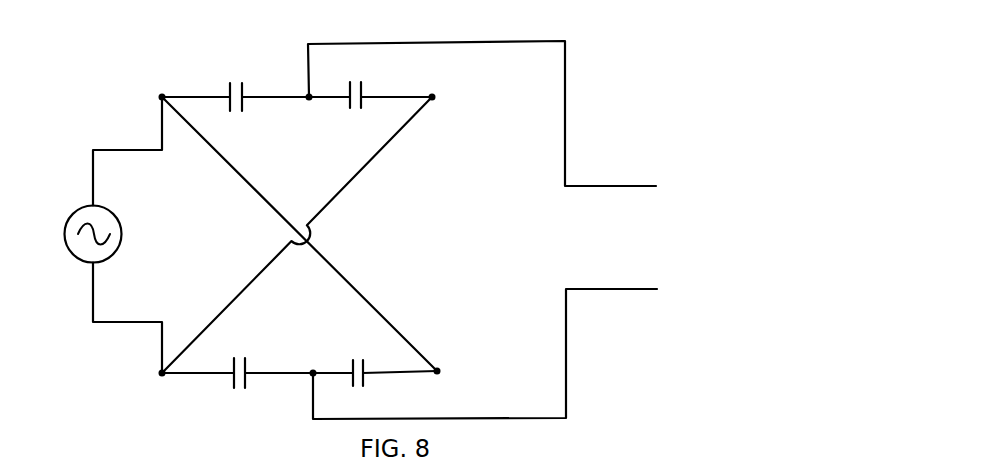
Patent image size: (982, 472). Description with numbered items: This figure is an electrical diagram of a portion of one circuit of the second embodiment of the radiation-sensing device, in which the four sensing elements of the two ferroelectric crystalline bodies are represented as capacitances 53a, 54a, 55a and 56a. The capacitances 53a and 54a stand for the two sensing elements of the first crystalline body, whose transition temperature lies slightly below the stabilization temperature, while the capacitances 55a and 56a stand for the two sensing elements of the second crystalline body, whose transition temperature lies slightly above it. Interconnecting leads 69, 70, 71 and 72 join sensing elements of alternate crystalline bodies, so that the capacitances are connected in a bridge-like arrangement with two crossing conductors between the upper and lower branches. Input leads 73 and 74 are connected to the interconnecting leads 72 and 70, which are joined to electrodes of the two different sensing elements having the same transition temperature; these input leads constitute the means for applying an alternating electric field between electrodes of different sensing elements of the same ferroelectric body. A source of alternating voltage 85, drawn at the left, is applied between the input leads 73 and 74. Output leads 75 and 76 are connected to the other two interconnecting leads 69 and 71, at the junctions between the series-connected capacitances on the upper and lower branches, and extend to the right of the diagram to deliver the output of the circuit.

The capacitance 53a is at (244, 91).
The capacitance 54a is at (248, 365).
The capacitance 55a is at (363, 90).
The capacitance 56a is at (367, 377).
The interconnecting lead 69 is at (276, 98).
The interconnecting lead 70 is at (400, 132).
The interconnecting lead 71 is at (297, 374).
The interconnecting lead 72 is at (362, 293).
The input lead 73 is at (107, 150).
The input lead 74 is at (118, 325).
The output lead 75 is at (431, 43).
The output lead 76 is at (513, 419).
The source of alternating voltage 85 is at (73, 213).